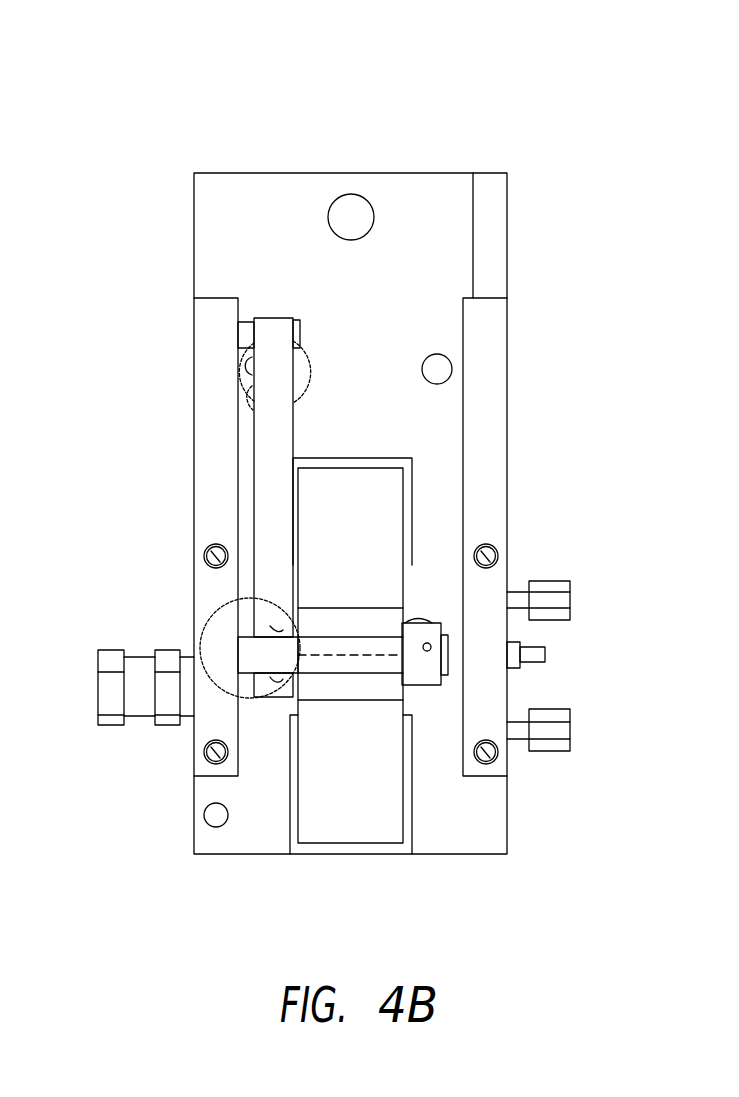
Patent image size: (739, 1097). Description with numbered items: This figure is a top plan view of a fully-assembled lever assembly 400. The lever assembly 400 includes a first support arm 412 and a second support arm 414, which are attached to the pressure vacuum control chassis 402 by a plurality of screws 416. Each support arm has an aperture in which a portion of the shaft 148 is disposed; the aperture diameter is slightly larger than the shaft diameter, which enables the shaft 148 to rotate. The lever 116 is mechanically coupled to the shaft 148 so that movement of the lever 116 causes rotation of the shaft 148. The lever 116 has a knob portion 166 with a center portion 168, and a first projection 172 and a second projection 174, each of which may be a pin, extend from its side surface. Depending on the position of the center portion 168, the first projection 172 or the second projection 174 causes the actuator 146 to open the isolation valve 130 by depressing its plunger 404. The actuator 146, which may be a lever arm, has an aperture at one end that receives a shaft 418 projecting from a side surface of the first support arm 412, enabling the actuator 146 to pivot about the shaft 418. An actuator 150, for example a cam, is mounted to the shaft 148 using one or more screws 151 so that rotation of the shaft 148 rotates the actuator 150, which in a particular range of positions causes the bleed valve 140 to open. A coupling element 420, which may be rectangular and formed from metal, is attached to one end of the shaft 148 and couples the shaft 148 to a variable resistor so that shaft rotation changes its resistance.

The lever assembly 400 is at (553, 86).
The pressure vacuum control chassis 402 is at (490, 834).
The plunger 404 is at (248, 365).
The first support arm 412 is at (210, 486).
The second support arm 414 is at (487, 355).
The screws 416 is at (213, 548).
The shaft 418 is at (248, 337).
The coupling element 420 is at (545, 657).
The lever 116 is at (357, 825).
The isolation valve 130 is at (313, 372).
The bleed valve 140 is at (422, 621).
The actuator 146 is at (282, 443).
The shaft 148 is at (250, 657).
The actuator 150 is at (470, 652).
The screws 151 is at (431, 644).
The knob portion 166 is at (330, 605).
The center portion 168 is at (325, 648).
The first projection 172 is at (250, 630).
The second projection 174 is at (290, 695).